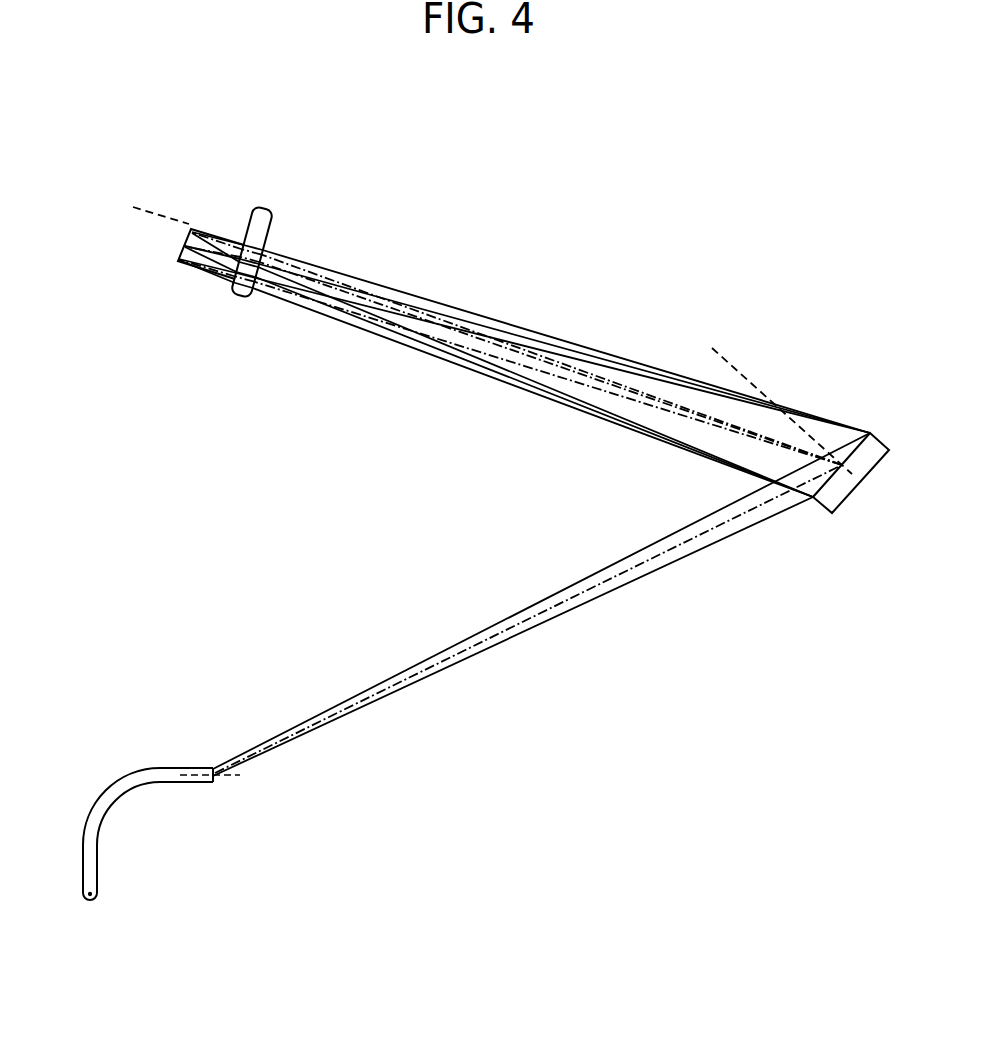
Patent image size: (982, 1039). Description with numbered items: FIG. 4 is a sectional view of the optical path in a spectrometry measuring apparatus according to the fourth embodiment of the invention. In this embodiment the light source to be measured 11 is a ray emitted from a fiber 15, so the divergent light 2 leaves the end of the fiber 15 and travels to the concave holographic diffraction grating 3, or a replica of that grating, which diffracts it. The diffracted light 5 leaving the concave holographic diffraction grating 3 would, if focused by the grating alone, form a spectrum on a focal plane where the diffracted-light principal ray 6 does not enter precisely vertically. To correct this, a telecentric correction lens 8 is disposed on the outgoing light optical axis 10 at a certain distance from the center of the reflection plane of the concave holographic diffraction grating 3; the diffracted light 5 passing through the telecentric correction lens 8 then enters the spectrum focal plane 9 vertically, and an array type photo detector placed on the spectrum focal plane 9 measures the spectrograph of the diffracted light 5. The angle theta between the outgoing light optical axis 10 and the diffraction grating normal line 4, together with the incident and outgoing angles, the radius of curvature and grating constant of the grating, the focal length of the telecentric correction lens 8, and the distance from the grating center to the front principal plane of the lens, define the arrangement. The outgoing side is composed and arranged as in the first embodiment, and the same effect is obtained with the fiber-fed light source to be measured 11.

The divergent light 2 is at (505, 621).
The concave holographic diffraction grating 3 is at (870, 433).
The diffraction grating normal line 4 is at (742, 374).
The diffracted light 5 is at (642, 426).
The diffracted-light principal ray 6 is at (548, 358).
The telecentric correction lens 8 is at (273, 237).
The spectrum focal plane 9 is at (193, 228).
The outgoing light optical axis 10 is at (170, 218).
The light source to be measured 11 is at (214, 768).
The fiber 15 is at (93, 872).